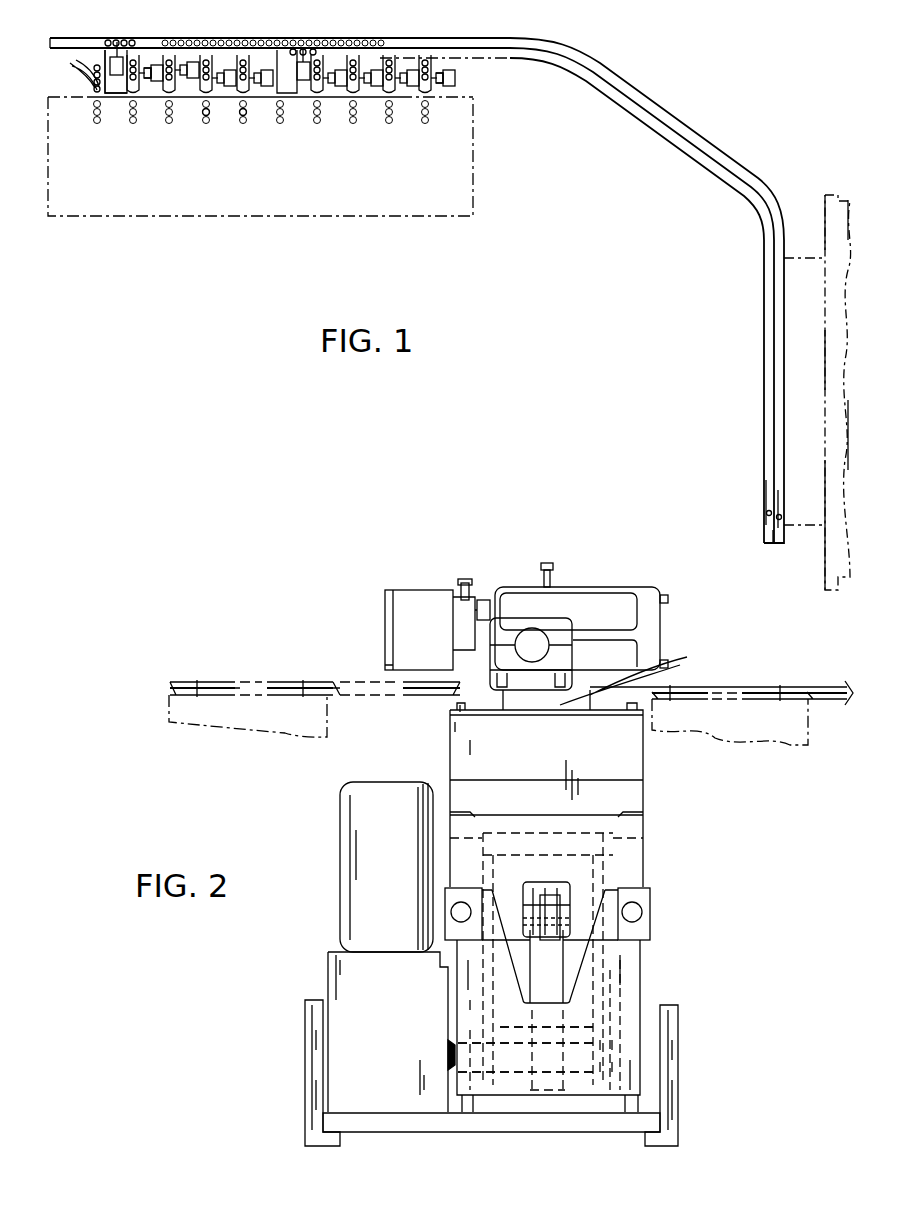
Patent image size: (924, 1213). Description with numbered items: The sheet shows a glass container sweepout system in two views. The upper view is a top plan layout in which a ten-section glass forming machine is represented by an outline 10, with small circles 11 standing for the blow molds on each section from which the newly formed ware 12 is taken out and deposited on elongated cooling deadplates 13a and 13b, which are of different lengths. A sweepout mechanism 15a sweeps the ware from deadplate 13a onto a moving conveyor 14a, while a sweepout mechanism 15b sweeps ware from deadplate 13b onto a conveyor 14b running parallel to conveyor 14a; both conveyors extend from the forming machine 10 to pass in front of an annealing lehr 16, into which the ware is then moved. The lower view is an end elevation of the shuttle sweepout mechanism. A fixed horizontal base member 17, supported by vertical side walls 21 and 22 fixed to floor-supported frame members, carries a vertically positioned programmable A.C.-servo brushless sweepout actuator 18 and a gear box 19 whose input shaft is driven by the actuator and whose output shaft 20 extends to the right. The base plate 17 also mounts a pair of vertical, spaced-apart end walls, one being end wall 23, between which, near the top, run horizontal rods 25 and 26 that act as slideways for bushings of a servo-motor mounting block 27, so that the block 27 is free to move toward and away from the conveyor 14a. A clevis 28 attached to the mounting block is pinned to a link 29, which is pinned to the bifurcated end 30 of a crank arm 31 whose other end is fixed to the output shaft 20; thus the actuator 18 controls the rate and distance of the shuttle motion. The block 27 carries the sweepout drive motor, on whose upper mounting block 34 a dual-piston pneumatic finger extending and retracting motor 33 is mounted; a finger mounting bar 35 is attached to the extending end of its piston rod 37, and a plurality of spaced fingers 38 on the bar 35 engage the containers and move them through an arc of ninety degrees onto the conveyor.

In FIG. 1, the glass forming machine 10 is at (390, 198).
In FIG. 1, the blow molds 11 is at (243, 123).
In FIG. 1, the ware 12 is at (90, 66).
In FIG. 1, the cooling deadplate 13a is at (108, 95).
In FIG. 2, the cooling deadplate 13a is at (170, 688).
In FIG. 1, the cooling deadplate 13b is at (272, 95).
In FIG. 2, the cooling deadplate 13b is at (790, 745).
In FIG. 1, the conveyor 14a is at (707, 135).
In FIG. 1, the conveyor 14b is at (702, 158).
In FIG. 1, the sweepout mechanism 15a is at (187, 93).
In FIG. 2, the sweepout mechanism 15a is at (655, 1003).
In FIG. 1, the sweepout mechanism 15b is at (462, 93).
In FIG. 1, the annealing lehr 16 is at (800, 472).
In FIG. 2, the base member 17 is at (453, 1120).
In FIG. 2, the sweepout actuator 18 is at (352, 836).
In FIG. 2, the gear box 19 is at (340, 965).
In FIG. 2, the output shaft 20 is at (505, 1070).
In FIG. 2, the side wall 21 is at (318, 1078).
In FIG. 2, the side wall 22 is at (668, 1085).
In FIG. 2, the end wall 23 is at (630, 945).
In FIG. 2, the horizontal rod 25 is at (461, 912).
In FIG. 2, the horizontal rod 26 is at (632, 913).
In FIG. 2, the mounting block 27 is at (630, 876).
In FIG. 2, the clevis 28 is at (550, 900).
In FIG. 2, the link 29 is at (547, 892).
In FIG. 2, the bifurcated end 30 is at (543, 875).
In FIG. 2, the crank arm 31 is at (547, 962).
In FIG. 2, the finger extending and retracting motor 33 is at (573, 602).
In FIG. 2, the upper mounting block 34 is at (639, 676).
In FIG. 2, the finger mounting bar 35 is at (472, 600).
In FIG. 2, the piston rod 37 is at (487, 602).
In FIG. 2, the fingers 38 is at (397, 602).